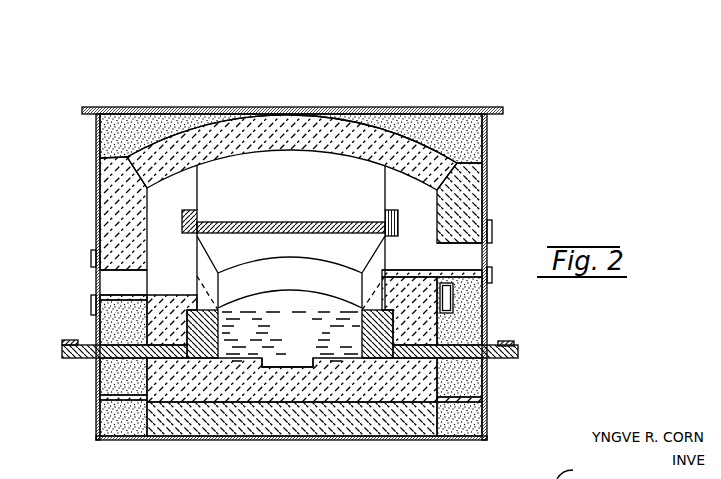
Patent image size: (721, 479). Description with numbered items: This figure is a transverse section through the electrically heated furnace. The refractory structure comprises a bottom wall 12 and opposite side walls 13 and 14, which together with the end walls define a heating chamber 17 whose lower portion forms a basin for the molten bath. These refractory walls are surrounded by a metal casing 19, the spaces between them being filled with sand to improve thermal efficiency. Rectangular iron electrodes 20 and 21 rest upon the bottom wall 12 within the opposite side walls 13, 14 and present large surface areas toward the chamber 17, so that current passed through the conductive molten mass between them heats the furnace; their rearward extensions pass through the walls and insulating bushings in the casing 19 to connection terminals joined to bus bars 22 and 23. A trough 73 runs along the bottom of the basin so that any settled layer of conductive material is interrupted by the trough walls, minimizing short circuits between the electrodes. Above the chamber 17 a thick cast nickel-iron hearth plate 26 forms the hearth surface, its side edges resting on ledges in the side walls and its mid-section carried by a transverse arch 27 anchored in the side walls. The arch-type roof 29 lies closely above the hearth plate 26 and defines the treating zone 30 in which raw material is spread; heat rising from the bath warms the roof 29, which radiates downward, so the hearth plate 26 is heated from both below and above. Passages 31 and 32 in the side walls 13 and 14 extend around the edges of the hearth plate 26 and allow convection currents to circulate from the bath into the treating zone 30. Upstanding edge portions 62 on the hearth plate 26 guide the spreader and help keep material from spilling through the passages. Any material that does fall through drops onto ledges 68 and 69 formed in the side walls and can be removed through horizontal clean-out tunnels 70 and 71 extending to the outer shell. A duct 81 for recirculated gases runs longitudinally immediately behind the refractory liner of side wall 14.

The bottom wall 12 is at (300, 397).
The side wall 13 is at (118, 230).
The side wall 14 is at (480, 311).
The heating chamber 17 is at (300, 332).
The metal casing 19 is at (402, 113).
The electrode 20 is at (213, 330).
The electrode 21 is at (368, 338).
The bus bar 22 is at (72, 340).
The bus bar 23 is at (512, 343).
The hearth plate 26 is at (265, 225).
The arch 27 is at (298, 255).
The roof 29 is at (313, 121).
The treating zone 30 is at (300, 187).
The passage 31 is at (178, 253).
The passage 32 is at (430, 234).
The upstanding edge portion 62 is at (192, 218).
The ledge 68 is at (167, 293).
The ledge 69 is at (403, 272).
The clean-out tunnel 70 is at (110, 283).
The clean-out tunnel 71 is at (483, 256).
The trough 73 is at (295, 360).
The duct 81 is at (485, 297).